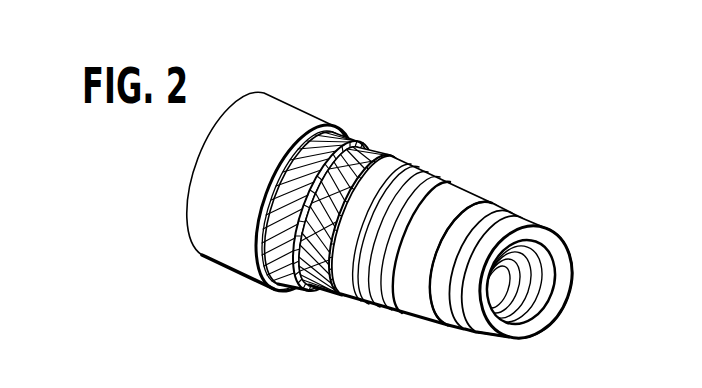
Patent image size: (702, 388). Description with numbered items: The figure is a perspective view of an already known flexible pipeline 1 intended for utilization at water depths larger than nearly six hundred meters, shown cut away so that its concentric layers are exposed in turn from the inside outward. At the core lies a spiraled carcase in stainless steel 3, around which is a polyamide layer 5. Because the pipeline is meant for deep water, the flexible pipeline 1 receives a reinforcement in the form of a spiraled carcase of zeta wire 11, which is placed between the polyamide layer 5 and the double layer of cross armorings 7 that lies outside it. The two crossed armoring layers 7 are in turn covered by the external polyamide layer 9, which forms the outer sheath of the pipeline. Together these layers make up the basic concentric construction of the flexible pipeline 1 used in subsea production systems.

The flexible pipeline 1 is at (172, 204).
The spiraled carcase in stainless steel 3 is at (512, 224).
The polyamide layer 5 is at (433, 234).
The double layer of cross armorings 7 is at (327, 143).
The external polyamide layer 9 is at (277, 111).
The spiraled carcase of zeta wire 11 is at (415, 180).